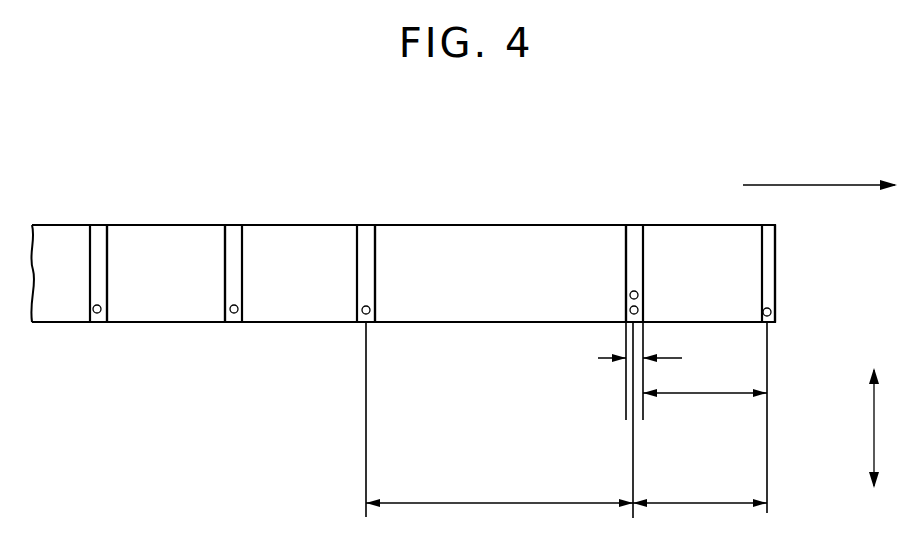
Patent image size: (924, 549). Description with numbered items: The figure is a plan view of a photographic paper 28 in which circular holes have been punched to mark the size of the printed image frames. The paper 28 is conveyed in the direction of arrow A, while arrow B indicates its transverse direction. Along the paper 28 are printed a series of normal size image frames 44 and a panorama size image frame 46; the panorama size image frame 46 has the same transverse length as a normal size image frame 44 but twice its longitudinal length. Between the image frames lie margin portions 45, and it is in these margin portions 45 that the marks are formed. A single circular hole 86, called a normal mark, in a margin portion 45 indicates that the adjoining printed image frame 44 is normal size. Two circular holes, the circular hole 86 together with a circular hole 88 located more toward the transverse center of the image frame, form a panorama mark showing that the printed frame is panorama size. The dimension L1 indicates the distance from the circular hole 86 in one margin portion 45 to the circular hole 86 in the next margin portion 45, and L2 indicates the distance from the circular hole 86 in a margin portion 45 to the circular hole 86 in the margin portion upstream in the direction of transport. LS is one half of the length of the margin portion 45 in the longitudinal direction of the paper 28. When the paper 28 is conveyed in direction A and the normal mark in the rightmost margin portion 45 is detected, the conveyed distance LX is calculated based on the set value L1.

The photographic paper 28 is at (470, 195).
The normal size image frame 44 is at (187, 237).
The margin portion 45 is at (372, 280).
The panorama size image frame 46 is at (513, 233).
The circular hole 86 is at (362, 314).
The circular hole 88 is at (640, 296).
The direction of transport A is at (809, 184).
The transverse direction B is at (876, 428).
The distance L1 is at (696, 504).
The distance L2 is at (481, 504).
The conveyed distance LX is at (697, 395).
The half margin length LS is at (643, 346).